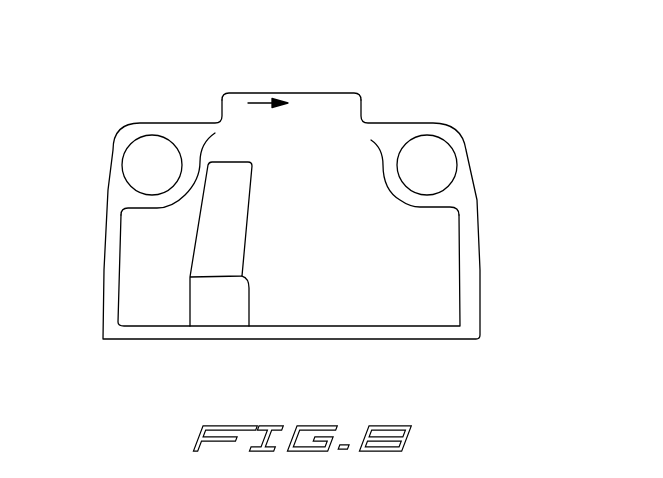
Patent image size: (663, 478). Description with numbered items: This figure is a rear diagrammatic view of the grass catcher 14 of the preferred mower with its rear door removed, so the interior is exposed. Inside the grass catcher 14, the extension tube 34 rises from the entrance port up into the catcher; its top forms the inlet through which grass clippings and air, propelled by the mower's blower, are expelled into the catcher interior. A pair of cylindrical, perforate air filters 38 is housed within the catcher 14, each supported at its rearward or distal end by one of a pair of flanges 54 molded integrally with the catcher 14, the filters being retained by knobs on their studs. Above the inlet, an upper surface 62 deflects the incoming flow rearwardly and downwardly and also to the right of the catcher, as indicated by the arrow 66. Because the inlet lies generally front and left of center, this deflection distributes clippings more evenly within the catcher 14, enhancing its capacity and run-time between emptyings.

The grass catcher 14 is at (483, 270).
The extension tube 34 is at (205, 240).
The perforate air filters 38 is at (138, 150).
The flanges 54 is at (148, 203).
The upper surface 62 is at (233, 93).
The arrow 66 is at (223, 153).